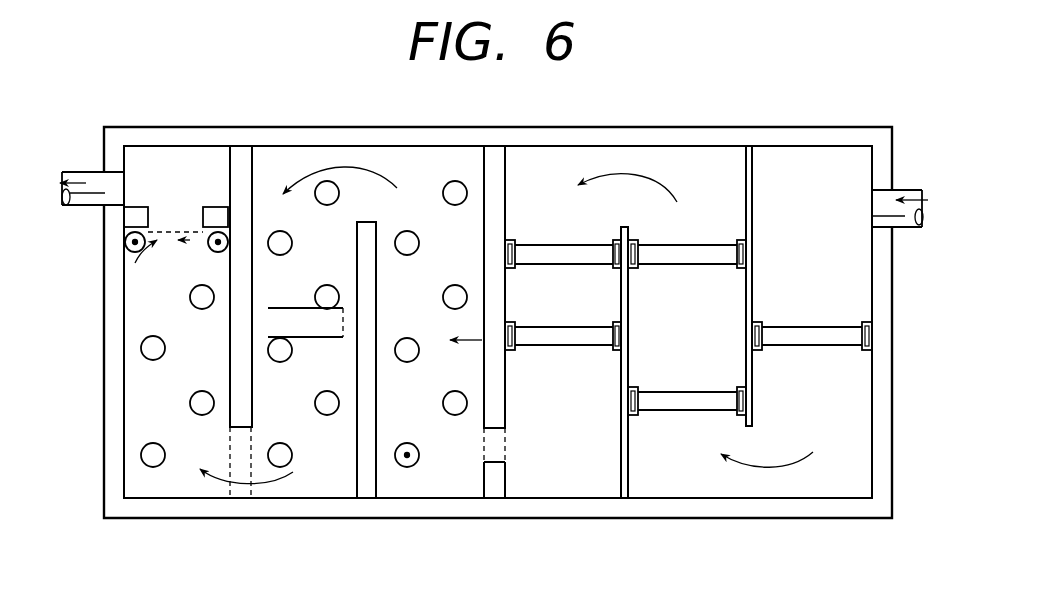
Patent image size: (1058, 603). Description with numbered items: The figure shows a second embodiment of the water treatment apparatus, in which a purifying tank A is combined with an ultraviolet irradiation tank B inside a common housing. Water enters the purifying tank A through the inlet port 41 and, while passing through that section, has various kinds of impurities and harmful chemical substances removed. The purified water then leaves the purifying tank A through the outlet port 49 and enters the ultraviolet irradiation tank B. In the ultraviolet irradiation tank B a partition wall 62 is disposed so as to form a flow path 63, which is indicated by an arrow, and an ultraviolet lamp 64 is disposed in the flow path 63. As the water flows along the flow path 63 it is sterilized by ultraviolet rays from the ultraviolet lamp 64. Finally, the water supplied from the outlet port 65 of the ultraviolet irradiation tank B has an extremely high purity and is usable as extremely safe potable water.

The inlet port 41 is at (914, 190).
The outlet port 49 is at (495, 440).
The partition wall 62 is at (237, 175).
The flow path 63 is at (377, 168).
The ultraviolet lamp 64 is at (405, 467).
The outlet port 65 is at (84, 172).
The purifying tank A is at (830, 549).
The ultraviolet irradiation tank B is at (231, 535).